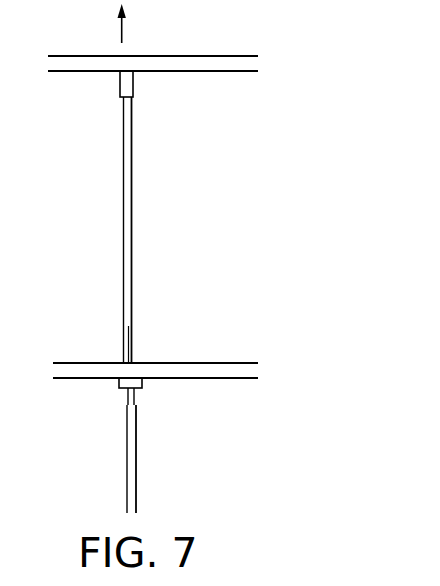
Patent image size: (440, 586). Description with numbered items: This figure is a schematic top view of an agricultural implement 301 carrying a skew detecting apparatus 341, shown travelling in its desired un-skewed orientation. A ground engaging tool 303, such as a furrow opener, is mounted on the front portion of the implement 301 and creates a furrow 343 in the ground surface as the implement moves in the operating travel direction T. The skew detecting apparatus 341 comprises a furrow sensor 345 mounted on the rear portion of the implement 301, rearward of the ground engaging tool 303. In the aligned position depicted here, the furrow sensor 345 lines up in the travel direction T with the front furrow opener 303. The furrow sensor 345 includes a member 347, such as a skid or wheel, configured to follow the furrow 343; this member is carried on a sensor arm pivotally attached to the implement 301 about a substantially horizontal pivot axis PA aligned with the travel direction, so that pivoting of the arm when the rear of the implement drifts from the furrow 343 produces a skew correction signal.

The operating travel direction T is at (123, 32).
The implement 301 is at (200, 54).
The ground engaging tool 303 is at (134, 84).
The furrow 343 is at (132, 185).
The pivot axis PA is at (133, 343).
The skew detecting apparatus 341 is at (90, 338).
The furrow sensor 345 is at (143, 385).
The member 347 is at (125, 397).